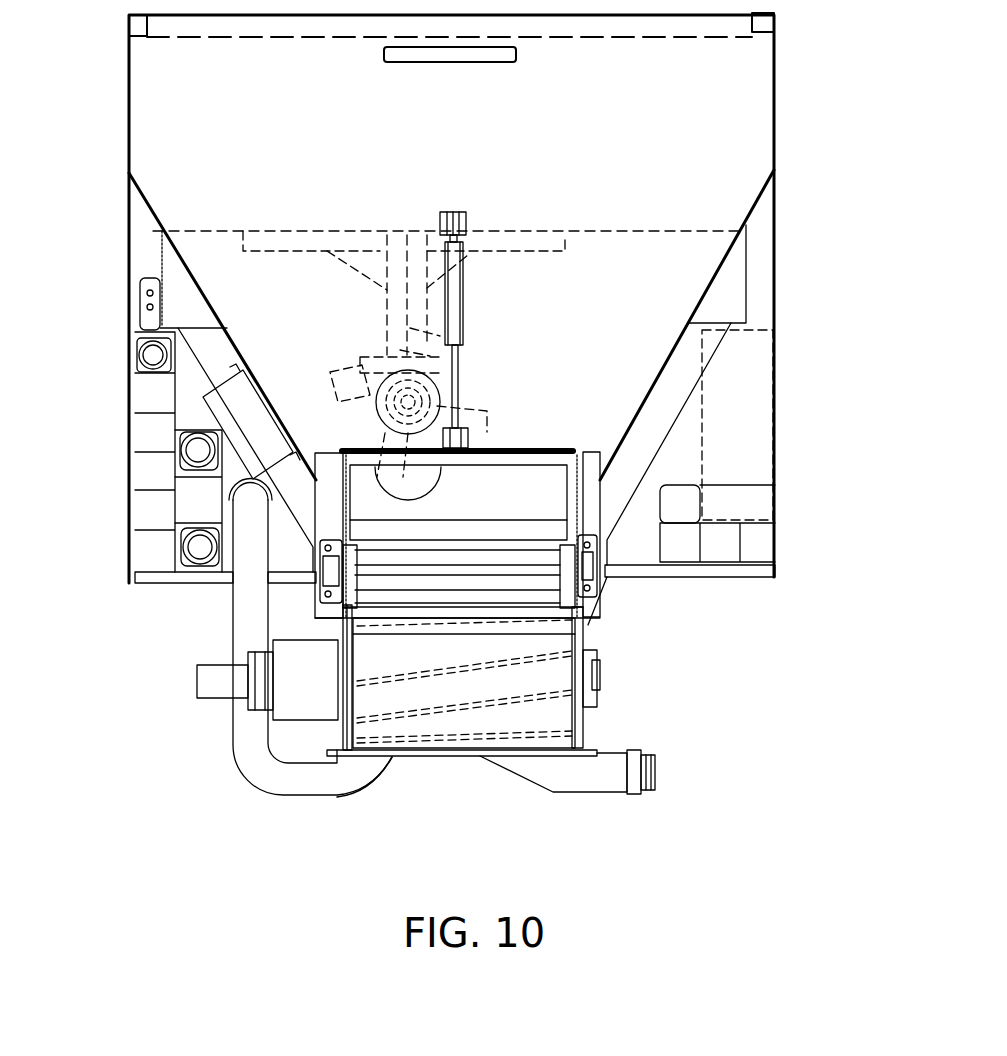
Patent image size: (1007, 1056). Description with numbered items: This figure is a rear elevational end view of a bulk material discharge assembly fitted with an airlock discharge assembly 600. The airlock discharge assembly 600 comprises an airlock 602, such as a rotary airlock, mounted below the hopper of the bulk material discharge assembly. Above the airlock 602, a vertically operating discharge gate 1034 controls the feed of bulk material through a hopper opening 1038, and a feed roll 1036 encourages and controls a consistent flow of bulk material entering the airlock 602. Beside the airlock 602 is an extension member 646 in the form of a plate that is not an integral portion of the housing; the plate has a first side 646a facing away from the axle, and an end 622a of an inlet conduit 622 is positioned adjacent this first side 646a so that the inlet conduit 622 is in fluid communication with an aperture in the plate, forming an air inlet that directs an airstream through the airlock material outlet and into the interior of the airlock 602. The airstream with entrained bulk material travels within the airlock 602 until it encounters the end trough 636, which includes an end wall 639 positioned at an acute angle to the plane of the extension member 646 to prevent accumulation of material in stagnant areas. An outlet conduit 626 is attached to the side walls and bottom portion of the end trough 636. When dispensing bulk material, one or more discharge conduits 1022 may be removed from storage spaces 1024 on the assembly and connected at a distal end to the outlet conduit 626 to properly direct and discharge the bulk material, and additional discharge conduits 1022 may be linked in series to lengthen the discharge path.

The airlock discharge assembly 600 is at (539, 679).
The airlock 602 is at (603, 712).
The inlet conduit 622 is at (262, 778).
The end of the inlet conduit 622a is at (390, 762).
The outlet conduit 626 is at (590, 795).
The end trough 636 is at (560, 795).
The end wall 639 is at (516, 758).
The extension member 646 is at (440, 757).
The first side 646a is at (472, 760).
The discharge conduit 1022 is at (187, 443).
The storage space 1024 is at (148, 548).
The discharge gate 1034 is at (565, 448).
The feed roll 1036 is at (487, 580).
The hopper opening 1038 is at (472, 433).